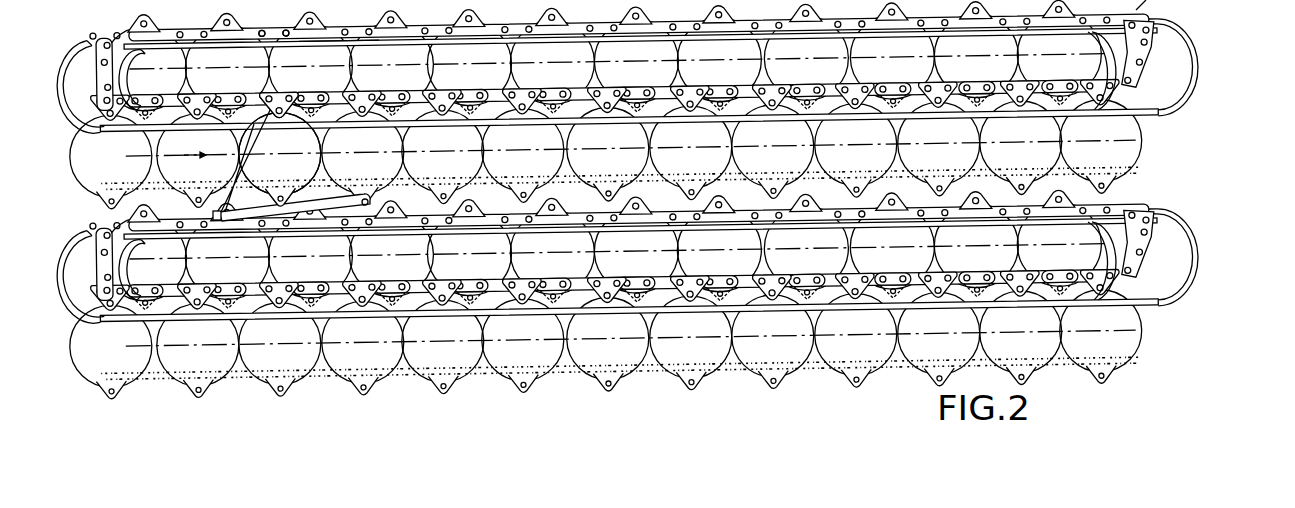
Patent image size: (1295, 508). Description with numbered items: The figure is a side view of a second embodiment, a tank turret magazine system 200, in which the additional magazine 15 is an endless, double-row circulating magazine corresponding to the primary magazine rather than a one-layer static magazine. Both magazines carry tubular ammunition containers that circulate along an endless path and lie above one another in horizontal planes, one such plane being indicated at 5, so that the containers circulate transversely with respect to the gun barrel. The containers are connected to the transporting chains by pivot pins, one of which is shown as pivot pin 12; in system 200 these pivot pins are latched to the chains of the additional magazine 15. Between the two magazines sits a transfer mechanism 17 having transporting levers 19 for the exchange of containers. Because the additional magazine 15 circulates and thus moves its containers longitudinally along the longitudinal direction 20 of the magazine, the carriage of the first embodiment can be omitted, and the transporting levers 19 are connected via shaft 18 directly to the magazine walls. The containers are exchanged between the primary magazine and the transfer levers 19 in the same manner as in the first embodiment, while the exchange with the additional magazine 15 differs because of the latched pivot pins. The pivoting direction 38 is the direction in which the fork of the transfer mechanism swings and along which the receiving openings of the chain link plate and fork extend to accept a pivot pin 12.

The tank turret magazine system 200 is at (1241, 102).
The additional magazine 15 is at (1165, 201).
The transfer mechanism 17 is at (319, 194).
The shaft 18 is at (367, 199).
The pivot pin 12 is at (272, 106).
The pivoting direction 38 is at (248, 141).
The transporting lever 19 is at (290, 207).
The longitudinal direction 20 is at (215, 157).
The guide rail 5 is at (337, 37).